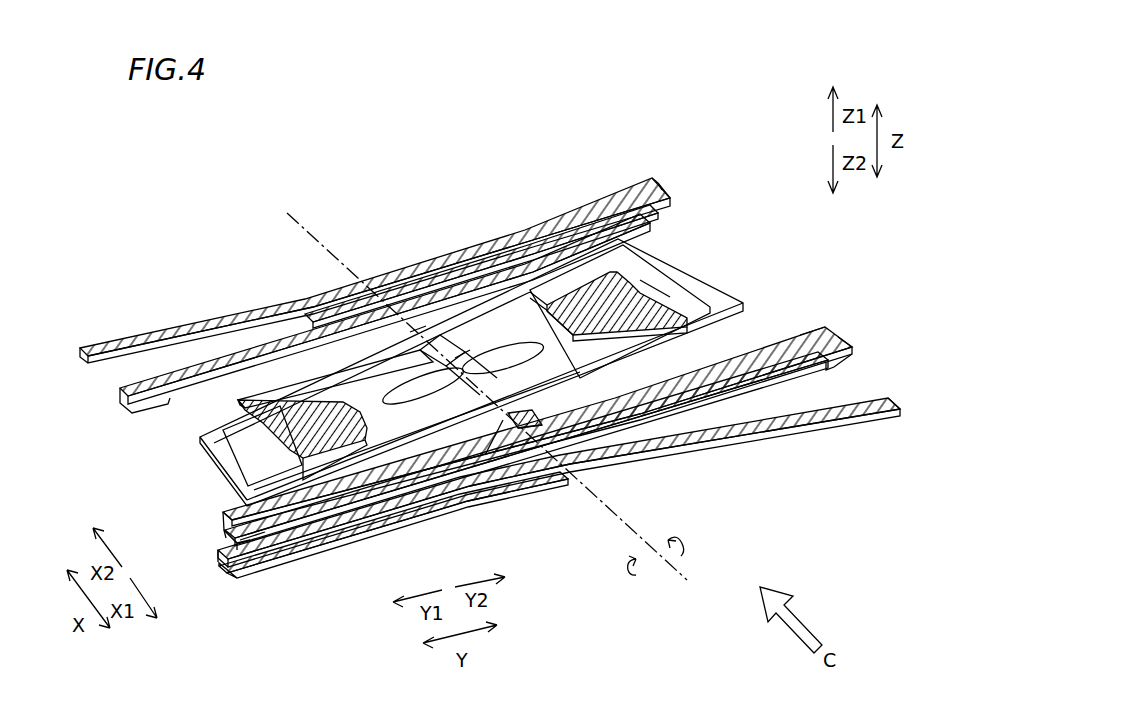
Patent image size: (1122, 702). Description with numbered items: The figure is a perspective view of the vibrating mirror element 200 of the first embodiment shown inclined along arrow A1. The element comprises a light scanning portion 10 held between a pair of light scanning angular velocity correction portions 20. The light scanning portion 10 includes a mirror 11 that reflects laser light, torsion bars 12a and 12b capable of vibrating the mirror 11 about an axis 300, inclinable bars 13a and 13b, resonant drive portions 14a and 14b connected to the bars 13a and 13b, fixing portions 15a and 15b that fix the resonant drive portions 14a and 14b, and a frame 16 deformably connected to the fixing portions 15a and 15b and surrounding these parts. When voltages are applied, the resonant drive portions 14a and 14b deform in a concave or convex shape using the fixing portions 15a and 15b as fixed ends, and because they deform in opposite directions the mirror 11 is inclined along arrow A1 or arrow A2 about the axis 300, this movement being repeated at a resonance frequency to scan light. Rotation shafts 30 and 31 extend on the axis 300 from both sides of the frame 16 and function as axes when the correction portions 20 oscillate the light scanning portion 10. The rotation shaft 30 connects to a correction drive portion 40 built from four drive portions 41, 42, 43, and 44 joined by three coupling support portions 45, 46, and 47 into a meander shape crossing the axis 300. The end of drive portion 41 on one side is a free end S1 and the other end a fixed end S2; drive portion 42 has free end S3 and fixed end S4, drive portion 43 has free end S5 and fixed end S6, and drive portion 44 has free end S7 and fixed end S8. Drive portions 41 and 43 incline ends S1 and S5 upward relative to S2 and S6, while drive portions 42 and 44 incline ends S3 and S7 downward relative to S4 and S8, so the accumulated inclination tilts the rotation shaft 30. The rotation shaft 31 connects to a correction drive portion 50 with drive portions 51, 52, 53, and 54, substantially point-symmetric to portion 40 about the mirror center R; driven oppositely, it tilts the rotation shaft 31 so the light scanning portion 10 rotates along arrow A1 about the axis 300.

The vibrating mirror element 200 is at (748, 95).
The light scanning portion 10 is at (727, 255).
The mirror 11 is at (500, 368).
The torsion bar 12a is at (460, 400).
The torsion bar 12b is at (447, 340).
The inclinable bar 13a is at (388, 440).
The inclinable bar 13b is at (350, 363).
The resonant drive portion 14a is at (235, 405).
The resonant drive portion 14b is at (578, 303).
The fixing portion 15a is at (277, 470).
The fixing portion 15b is at (637, 273).
The frame 16 is at (720, 298).
The light scanning angular velocity correction portion 20 is at (625, 143).
The rotation shaft 30 is at (500, 428).
The rotation shaft 31 is at (418, 330).
The correction drive portion 40 is at (754, 473).
The drive portion 41 is at (226, 546).
The drive portion 42 is at (778, 347).
The drive portion 43 is at (822, 372).
The drive portion 44 is at (812, 425).
The coupling support portion 45 is at (243, 563).
The coupling support portion 46 is at (850, 350).
The coupling support portion 47 is at (223, 514).
The correction drive portion 50 is at (288, 260).
The drive portion 51 is at (658, 197).
The drive portion 52 is at (560, 232).
The drive portion 53 is at (157, 370).
The drive portion 54 is at (190, 325).
The axis 300 is at (503, 408).
The center of the mirror R is at (465, 362).
The free end S1 is at (537, 426).
The fixed end S2 is at (248, 540).
The free end S3 is at (220, 560).
The fixed end S4 is at (817, 333).
The free end S5 is at (847, 338).
The fixed end S6 is at (225, 538).
The free end S7 is at (263, 530).
The fixed end S8 is at (897, 400).
The arrow A1 is at (688, 554).
The arrow A2 is at (639, 576).